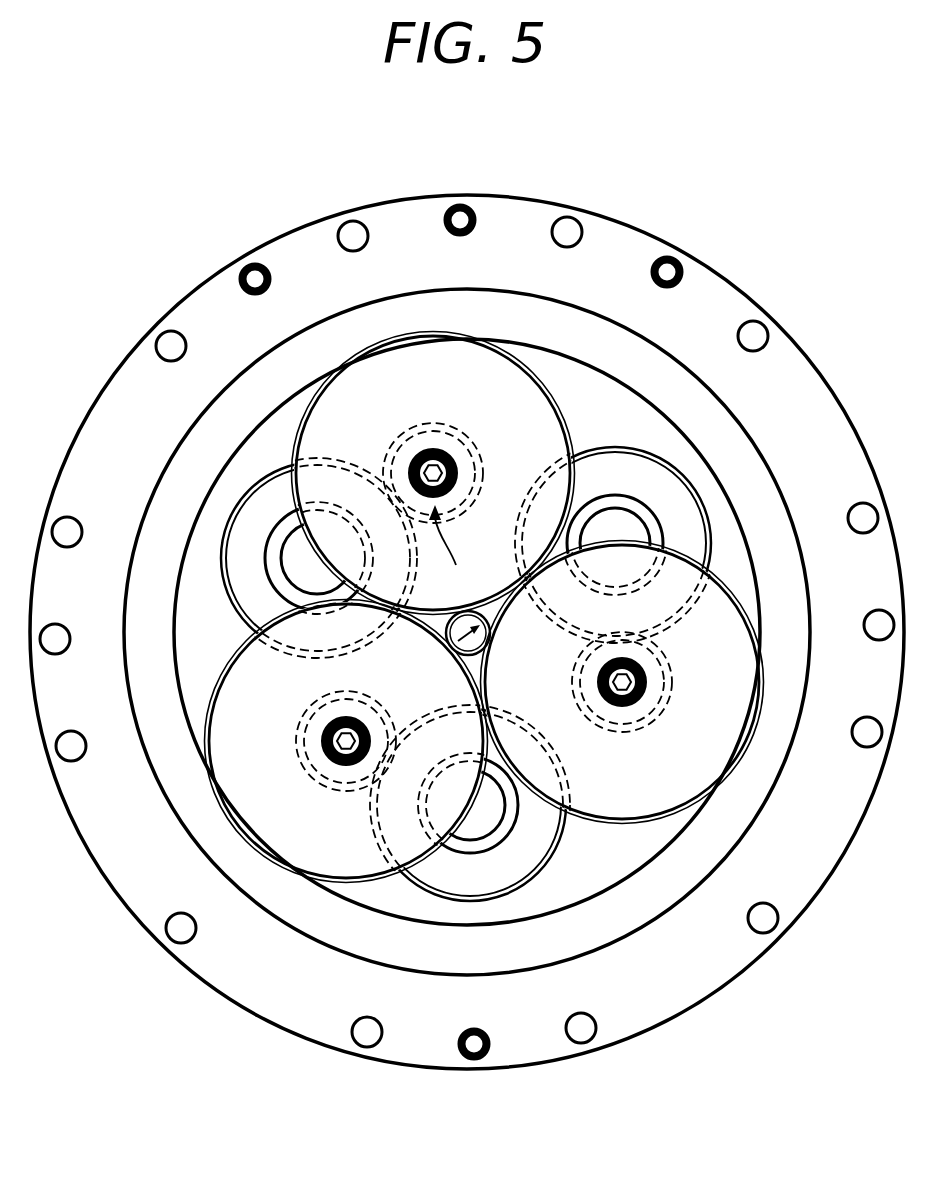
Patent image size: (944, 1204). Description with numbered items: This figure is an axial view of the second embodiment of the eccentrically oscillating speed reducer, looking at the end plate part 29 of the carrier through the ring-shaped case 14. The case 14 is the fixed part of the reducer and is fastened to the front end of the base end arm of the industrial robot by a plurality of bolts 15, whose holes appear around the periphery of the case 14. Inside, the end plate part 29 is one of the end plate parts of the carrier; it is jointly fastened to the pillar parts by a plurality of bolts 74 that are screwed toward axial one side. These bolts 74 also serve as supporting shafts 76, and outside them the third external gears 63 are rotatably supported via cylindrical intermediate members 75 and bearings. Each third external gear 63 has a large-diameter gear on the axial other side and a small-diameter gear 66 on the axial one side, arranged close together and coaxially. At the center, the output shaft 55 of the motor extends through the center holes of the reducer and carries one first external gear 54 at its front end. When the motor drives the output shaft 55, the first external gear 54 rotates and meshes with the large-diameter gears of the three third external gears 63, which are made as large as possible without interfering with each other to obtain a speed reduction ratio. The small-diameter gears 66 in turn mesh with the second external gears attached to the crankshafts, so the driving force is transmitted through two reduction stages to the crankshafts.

The case 14 is at (812, 408).
The bolts 15 is at (752, 334).
The end plate part 29 is at (742, 579).
The first external gear 54 is at (492, 652).
The output shaft 55 is at (440, 640).
The third external gears 63 is at (433, 457).
The small-diameter gears 66 is at (457, 428).
The bolts 74 is at (455, 463).
The intermediate members 75 is at (414, 456).
The supporting shafts 76 is at (454, 553).